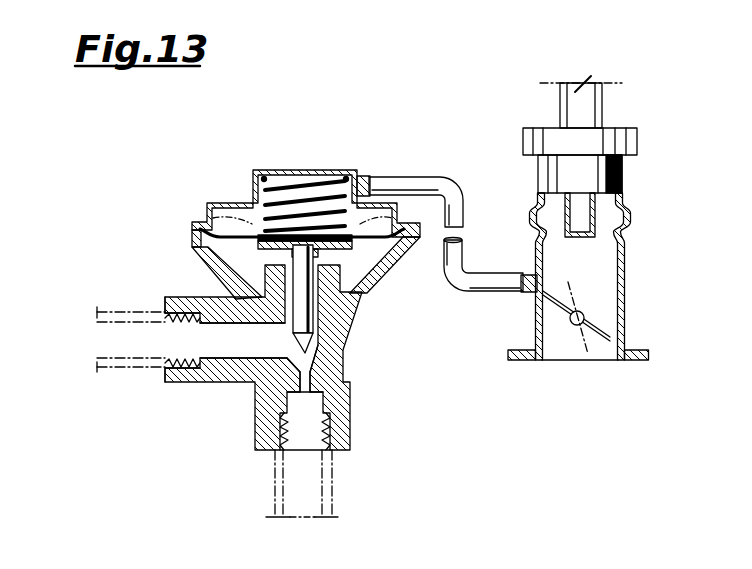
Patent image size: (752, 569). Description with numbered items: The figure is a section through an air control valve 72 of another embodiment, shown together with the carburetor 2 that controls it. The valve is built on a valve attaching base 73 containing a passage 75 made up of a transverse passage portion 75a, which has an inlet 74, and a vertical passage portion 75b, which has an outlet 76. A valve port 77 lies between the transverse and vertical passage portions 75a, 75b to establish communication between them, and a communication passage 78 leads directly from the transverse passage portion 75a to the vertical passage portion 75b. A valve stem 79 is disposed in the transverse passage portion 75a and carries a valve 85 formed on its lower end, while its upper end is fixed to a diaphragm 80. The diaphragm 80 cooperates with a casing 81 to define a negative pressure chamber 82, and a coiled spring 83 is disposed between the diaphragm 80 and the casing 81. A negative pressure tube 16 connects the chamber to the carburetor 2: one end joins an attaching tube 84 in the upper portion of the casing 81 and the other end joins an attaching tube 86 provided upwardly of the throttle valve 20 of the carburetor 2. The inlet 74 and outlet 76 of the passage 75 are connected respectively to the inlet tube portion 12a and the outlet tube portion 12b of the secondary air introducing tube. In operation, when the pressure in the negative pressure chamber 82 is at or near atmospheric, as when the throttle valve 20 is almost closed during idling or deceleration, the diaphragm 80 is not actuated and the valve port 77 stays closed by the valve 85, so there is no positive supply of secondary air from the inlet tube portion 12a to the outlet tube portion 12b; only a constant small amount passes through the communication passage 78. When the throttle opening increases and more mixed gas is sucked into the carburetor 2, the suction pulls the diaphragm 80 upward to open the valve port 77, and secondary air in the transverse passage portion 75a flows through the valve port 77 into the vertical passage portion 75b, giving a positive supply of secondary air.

The air control valve 72 is at (162, 207).
The casing 81 is at (276, 172).
The negative pressure chamber 82 is at (320, 190).
The coiled spring 83 is at (290, 200).
The attaching tube 84 is at (362, 180).
The negative pressure tube 16 is at (440, 187).
The diaphragm 80 is at (243, 237).
The carburetor 2 is at (632, 250).
The inlet 74 is at (165, 338).
The passage 75 is at (235, 332).
The transverse passage portion 75a is at (213, 352).
The vertical passage portion 75b is at (326, 414).
The valve attaching base 73 is at (353, 360).
The valve stem 79 is at (303, 306).
The valve 85 is at (308, 348).
The valve port 77 is at (311, 372).
The communication passage 78 is at (273, 381).
The outlet 76 is at (310, 449).
The inlet tube portion 12a is at (110, 367).
The outlet tube portion 12b is at (277, 475).
The attaching tube 86 is at (533, 293).
The throttle valve 20 is at (597, 335).